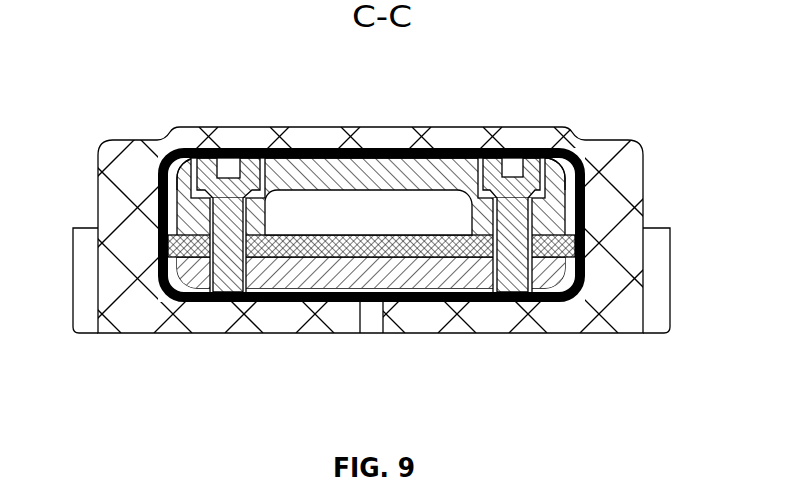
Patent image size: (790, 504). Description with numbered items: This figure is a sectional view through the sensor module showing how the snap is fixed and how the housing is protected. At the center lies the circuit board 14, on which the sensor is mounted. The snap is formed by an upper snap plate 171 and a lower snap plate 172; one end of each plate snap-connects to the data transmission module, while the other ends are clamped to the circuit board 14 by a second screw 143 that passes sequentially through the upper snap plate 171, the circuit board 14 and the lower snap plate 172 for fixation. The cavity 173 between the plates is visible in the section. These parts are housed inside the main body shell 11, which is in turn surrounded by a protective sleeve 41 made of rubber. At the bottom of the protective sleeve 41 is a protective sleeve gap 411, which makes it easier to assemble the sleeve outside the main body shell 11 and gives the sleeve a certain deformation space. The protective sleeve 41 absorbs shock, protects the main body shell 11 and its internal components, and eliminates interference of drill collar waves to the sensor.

The protective sleeve 41 is at (452, 137).
The main body shell 11 is at (467, 300).
The protective sleeve gap 411 is at (373, 312).
The circuit board 14 is at (330, 257).
The upper snap plate 171 is at (285, 177).
The cavity 173 is at (343, 213).
The lower snap plate 172 is at (266, 257).
The second screw 143 is at (518, 172).